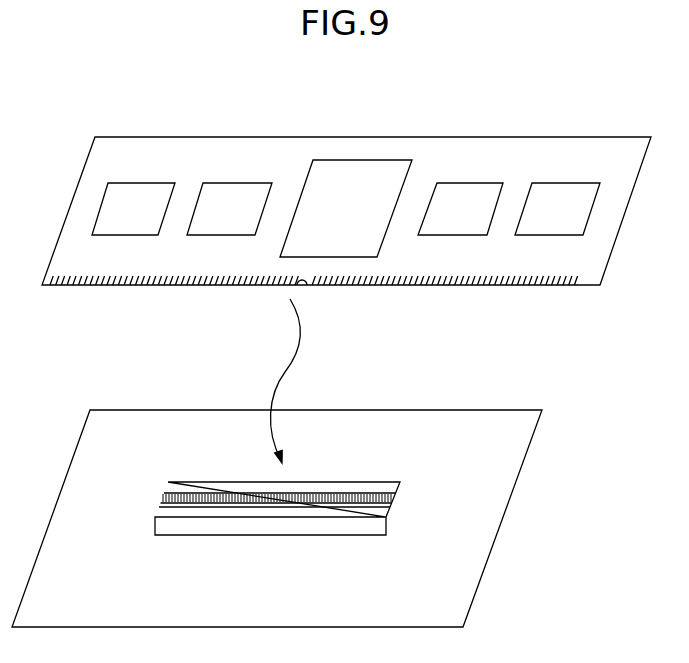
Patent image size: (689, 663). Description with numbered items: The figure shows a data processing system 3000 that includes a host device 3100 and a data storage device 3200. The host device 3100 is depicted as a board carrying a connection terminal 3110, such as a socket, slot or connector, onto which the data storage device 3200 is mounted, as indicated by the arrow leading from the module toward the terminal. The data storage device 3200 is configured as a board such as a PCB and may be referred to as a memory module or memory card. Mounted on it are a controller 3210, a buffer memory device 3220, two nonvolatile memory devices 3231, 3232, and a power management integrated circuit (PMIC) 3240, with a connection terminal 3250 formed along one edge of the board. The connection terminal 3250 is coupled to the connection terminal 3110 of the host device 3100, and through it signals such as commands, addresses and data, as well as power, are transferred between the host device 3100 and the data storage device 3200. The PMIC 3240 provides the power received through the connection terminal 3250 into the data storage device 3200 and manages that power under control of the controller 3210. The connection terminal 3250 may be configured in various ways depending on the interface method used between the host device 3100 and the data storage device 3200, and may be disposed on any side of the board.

The data processing system 3000 is at (196, 103).
The host device 3100 is at (277, 518).
The connection terminal 3110 is at (419, 476).
The data storage device 3200 is at (346, 232).
The controller 3210 is at (346, 208).
The buffer memory device 3220 is at (229, 209).
The nonvolatile memory device 3231 is at (460, 209).
The nonvolatile memory device 3232 is at (557, 209).
The power management integrated circuit (PMIC) 3240 is at (133, 209).
The connection terminal 3250 is at (76, 285).